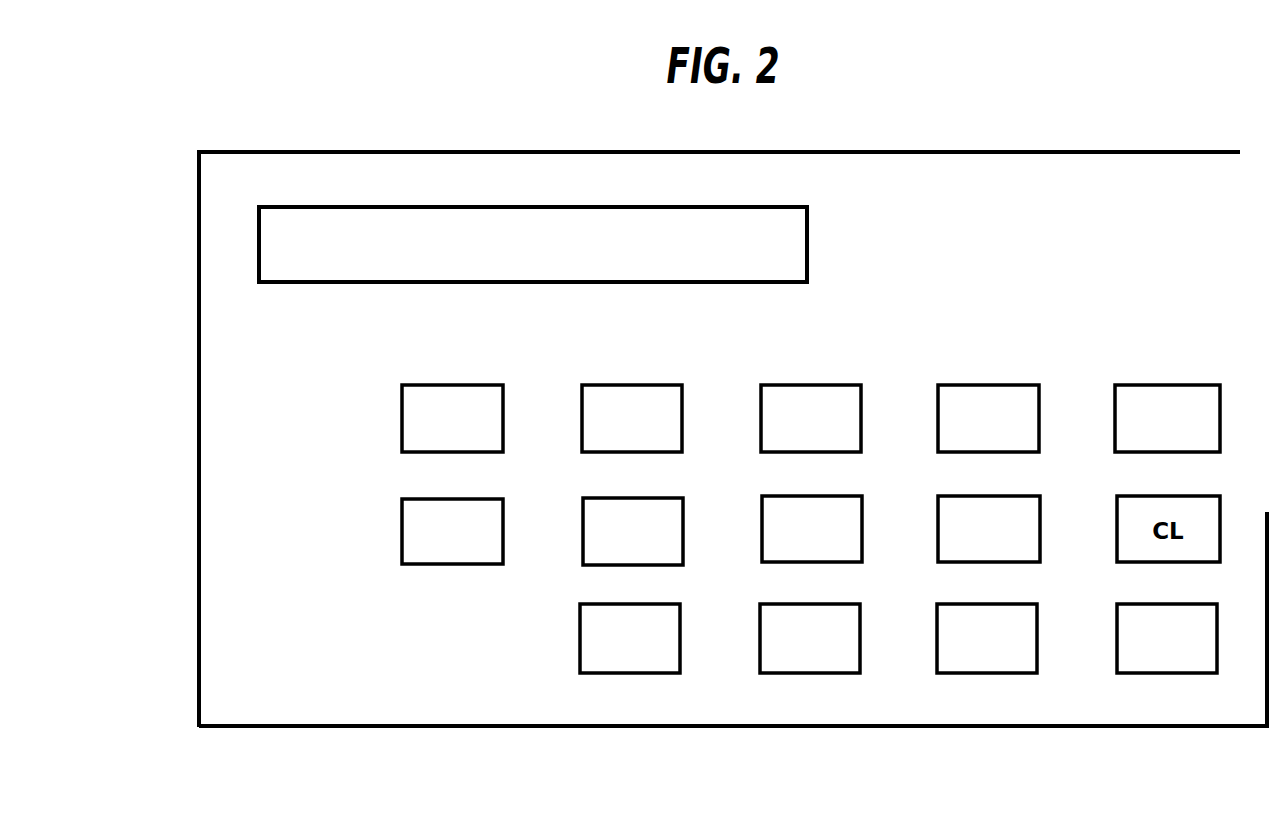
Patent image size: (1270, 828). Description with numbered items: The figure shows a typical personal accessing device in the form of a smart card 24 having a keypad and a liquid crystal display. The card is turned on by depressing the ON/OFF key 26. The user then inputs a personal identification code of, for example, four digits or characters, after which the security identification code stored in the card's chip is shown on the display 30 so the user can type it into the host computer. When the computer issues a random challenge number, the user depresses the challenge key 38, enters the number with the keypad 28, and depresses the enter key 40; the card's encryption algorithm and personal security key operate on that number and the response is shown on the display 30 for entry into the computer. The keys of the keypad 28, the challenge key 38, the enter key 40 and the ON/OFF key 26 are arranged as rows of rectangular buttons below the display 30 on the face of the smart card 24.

The smart card 24 is at (206, 403).
The ON/OFF key 26 is at (1168, 384).
The keypad 28 is at (942, 388).
The display 30 is at (475, 225).
The challenge key 38 is at (402, 417).
The enter key 40 is at (402, 553).